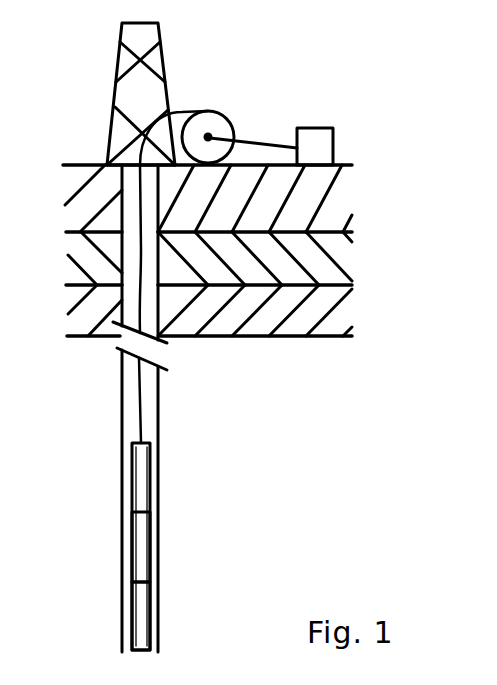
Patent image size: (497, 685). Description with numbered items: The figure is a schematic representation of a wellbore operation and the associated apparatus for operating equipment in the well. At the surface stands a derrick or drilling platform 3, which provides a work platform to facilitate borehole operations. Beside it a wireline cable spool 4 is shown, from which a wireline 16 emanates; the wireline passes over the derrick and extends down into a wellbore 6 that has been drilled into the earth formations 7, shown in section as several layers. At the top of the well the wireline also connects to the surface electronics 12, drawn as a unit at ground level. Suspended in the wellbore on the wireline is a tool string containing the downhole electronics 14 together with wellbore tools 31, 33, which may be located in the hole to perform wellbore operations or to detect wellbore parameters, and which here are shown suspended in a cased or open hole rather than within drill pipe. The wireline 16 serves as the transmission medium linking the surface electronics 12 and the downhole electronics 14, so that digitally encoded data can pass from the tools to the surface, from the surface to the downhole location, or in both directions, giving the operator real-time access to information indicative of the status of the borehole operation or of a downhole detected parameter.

The drilling platform 3 is at (118, 60).
The wireline cable spool 4 is at (231, 114).
The surface electronics 12 is at (333, 139).
The wireline 16 is at (142, 213).
The earth formations 7 is at (320, 268).
The wellbore 6 is at (160, 280).
The downhole electronics 14 is at (189, 541).
The wellbore tool 31 is at (150, 553).
The wellbore tool 33 is at (150, 623).